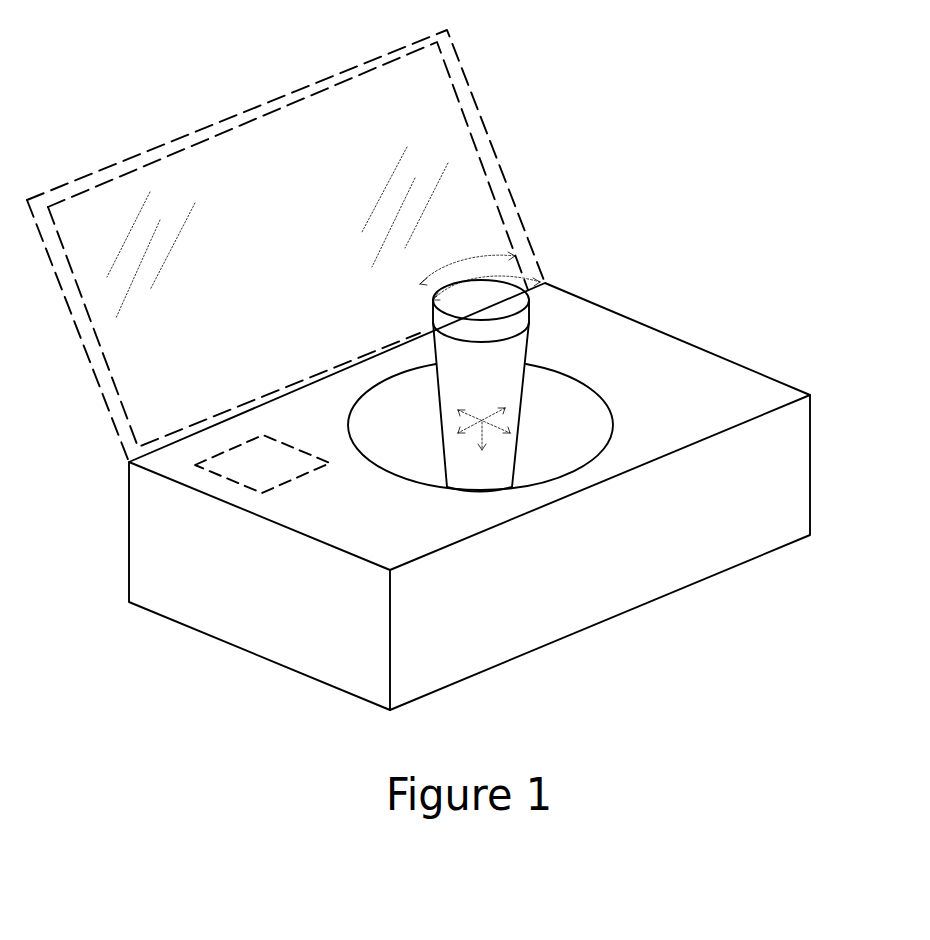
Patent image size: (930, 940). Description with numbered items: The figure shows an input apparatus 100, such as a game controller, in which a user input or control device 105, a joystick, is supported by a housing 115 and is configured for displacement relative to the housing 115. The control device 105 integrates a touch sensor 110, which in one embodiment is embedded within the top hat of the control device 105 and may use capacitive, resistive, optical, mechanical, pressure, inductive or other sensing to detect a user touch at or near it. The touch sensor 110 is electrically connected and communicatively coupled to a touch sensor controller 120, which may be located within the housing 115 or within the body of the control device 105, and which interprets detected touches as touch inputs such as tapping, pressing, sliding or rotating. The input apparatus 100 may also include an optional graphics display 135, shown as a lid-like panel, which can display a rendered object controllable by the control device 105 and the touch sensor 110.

The input apparatus 100 is at (700, 183).
The control device 105 is at (447, 393).
The touch sensor 110 is at (510, 303).
The housing 115 is at (598, 322).
The touch sensor controller 120 is at (232, 462).
The graphics display 135 is at (443, 147).